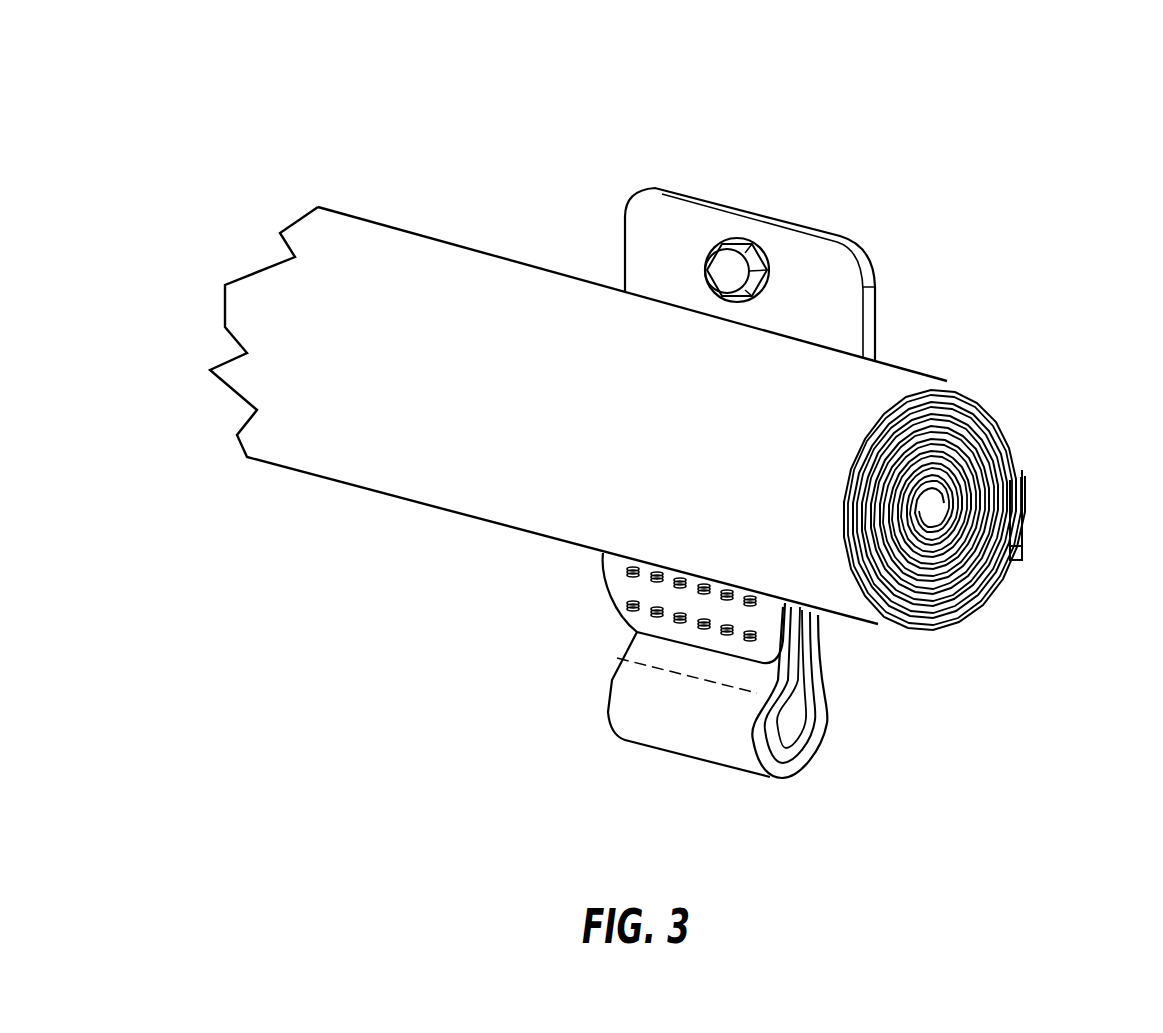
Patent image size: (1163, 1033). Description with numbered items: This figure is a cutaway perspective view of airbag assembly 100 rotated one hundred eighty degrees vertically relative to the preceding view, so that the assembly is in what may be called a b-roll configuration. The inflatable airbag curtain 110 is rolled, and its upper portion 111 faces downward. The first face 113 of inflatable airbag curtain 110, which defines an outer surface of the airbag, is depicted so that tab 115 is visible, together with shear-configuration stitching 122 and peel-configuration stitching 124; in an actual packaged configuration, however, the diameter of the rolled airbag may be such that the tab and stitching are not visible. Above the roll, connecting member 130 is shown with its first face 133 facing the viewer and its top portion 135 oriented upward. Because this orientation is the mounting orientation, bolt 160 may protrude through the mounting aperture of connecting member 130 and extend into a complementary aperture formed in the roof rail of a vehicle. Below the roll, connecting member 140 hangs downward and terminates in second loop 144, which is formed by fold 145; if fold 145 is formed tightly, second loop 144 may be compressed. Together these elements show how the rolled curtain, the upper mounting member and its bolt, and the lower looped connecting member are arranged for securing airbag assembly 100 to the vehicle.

The airbag assembly 100 is at (1042, 134).
The inflatable airbag curtain 110 is at (371, 248).
The upper portion 111 is at (1027, 540).
The first face 113 is at (536, 408).
The tab 115 is at (620, 600).
The shear-configuration stitching 122 is at (645, 617).
The peel-configuration stitching 124 is at (628, 571).
The connecting member 130 is at (686, 243).
The first face 133 is at (842, 316).
The top portion 135 is at (813, 260).
The connecting member 140 is at (700, 724).
The second loop 144 is at (787, 733).
The fold 145 is at (790, 772).
The bolt 160 is at (728, 275).